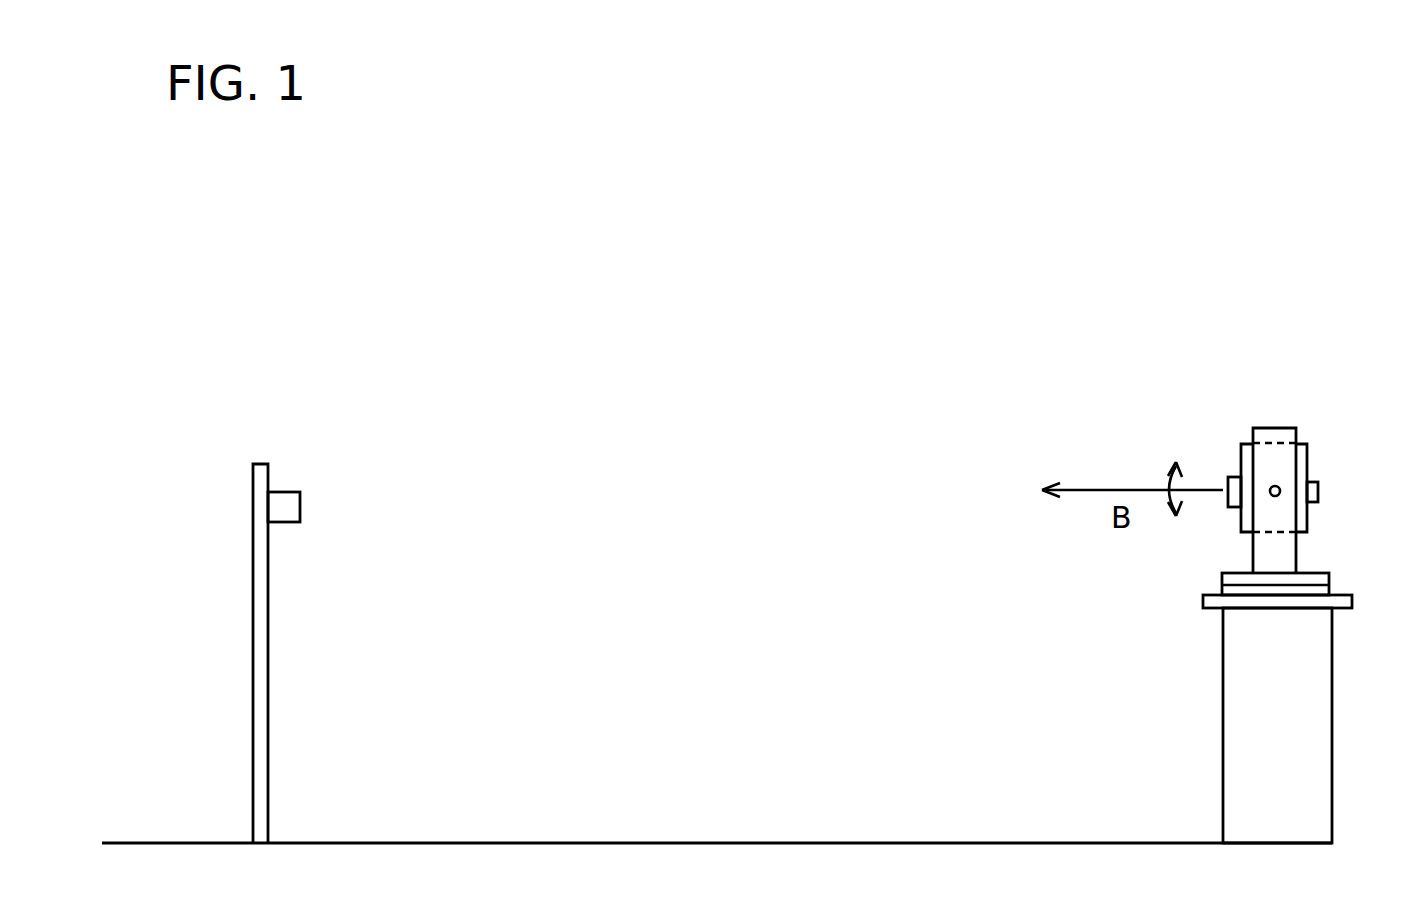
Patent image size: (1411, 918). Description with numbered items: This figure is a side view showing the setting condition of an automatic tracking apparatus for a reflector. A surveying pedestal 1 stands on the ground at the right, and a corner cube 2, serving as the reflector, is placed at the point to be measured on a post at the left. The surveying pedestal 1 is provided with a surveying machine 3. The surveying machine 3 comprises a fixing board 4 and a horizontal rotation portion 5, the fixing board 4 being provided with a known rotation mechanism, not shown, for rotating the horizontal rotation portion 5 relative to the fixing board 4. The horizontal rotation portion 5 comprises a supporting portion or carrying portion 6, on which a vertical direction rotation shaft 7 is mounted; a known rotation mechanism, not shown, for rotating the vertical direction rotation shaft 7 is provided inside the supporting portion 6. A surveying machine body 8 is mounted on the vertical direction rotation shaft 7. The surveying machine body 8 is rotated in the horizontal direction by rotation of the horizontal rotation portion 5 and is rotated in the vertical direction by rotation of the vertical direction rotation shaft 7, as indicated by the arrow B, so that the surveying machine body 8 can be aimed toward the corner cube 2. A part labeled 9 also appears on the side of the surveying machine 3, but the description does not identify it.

The surveying pedestal 1 is at (1228, 706).
The corner cube 2 is at (302, 506).
The surveying machine 3 is at (1262, 427).
The fixing board 4 is at (1222, 589).
The horizontal rotation portion 5 is at (1223, 577).
The supporting portion 6 is at (1285, 427).
The vertical direction rotation shaft 7 is at (1279, 486).
The surveying machine body 8 is at (1304, 515).
The adjustment knob 9 is at (1229, 500).